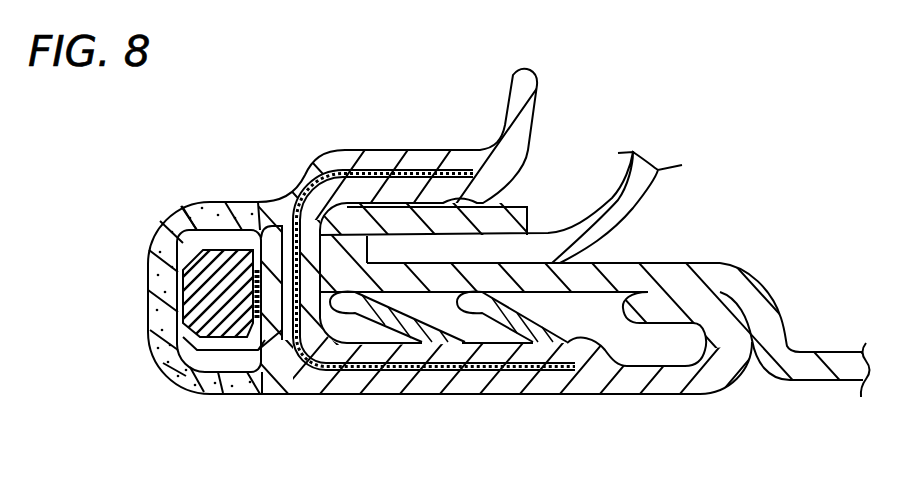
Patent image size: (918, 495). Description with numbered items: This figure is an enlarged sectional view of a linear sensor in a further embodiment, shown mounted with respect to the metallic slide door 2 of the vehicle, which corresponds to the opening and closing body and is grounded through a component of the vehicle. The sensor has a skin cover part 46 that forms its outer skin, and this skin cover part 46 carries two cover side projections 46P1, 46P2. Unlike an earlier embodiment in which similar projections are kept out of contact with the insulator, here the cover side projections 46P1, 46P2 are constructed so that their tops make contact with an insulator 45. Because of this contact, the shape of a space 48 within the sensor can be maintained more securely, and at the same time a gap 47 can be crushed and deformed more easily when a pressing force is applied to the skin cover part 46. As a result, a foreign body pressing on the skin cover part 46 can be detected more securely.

The slide door 2 is at (813, 381).
The insulator 45 is at (160, 333).
The skin cover part 46 is at (238, 202).
The cover side projection 46P1 is at (176, 213).
The cover side projection 46P2 is at (186, 384).
The gap 47 is at (276, 297).
The space 48 is at (177, 316).